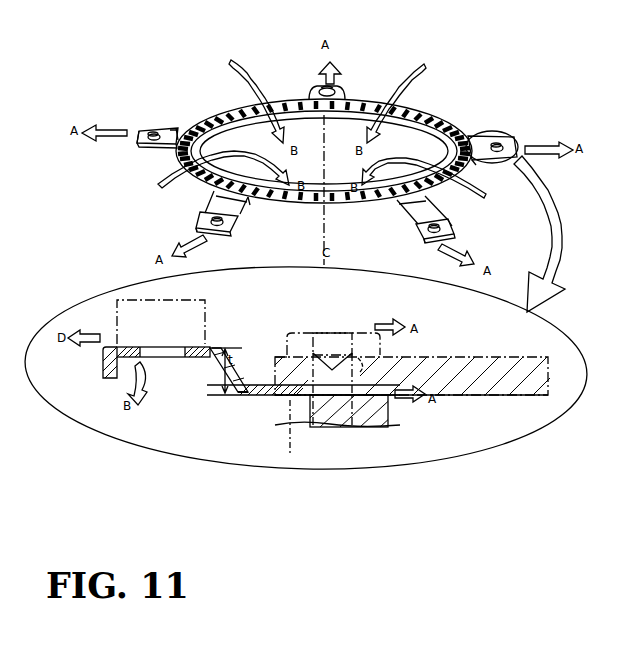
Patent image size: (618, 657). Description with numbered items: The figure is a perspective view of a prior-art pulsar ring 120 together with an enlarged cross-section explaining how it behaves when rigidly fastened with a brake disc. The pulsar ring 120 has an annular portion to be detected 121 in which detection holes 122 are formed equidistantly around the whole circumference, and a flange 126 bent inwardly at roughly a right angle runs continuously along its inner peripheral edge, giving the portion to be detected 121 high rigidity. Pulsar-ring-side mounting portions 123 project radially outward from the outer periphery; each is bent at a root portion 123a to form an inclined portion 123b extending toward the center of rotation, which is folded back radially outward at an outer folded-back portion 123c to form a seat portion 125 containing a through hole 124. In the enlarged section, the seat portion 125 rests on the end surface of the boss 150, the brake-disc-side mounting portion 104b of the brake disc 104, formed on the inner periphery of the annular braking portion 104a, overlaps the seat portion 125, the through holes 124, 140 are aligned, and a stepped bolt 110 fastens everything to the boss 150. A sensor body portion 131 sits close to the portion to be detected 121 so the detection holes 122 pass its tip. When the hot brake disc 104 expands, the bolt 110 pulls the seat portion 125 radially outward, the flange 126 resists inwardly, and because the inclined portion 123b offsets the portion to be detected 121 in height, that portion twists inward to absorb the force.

The pulsar ring 120 is at (199, 110).
The portion to be detected 121 is at (287, 203).
The detection holes 122 is at (305, 203).
The pulsar-ring-side mounting portion 123 is at (158, 127).
The root portion 123a is at (172, 148).
The inclined portion 123b is at (188, 112).
The outer folded-back portion 123c is at (172, 140).
The through hole 124 is at (151, 131).
The seat portion 125 is at (152, 142).
The flange 126 is at (238, 126).
The sensor body portion 131 is at (185, 310).
The brake disc 104 is at (488, 398).
The annular braking portion 104a is at (457, 357).
The brake-disc-side mounting portion 104b is at (283, 355).
The stepped bolt 110 is at (330, 333).
The through hole 140 is at (344, 333).
The boss 150 is at (337, 433).